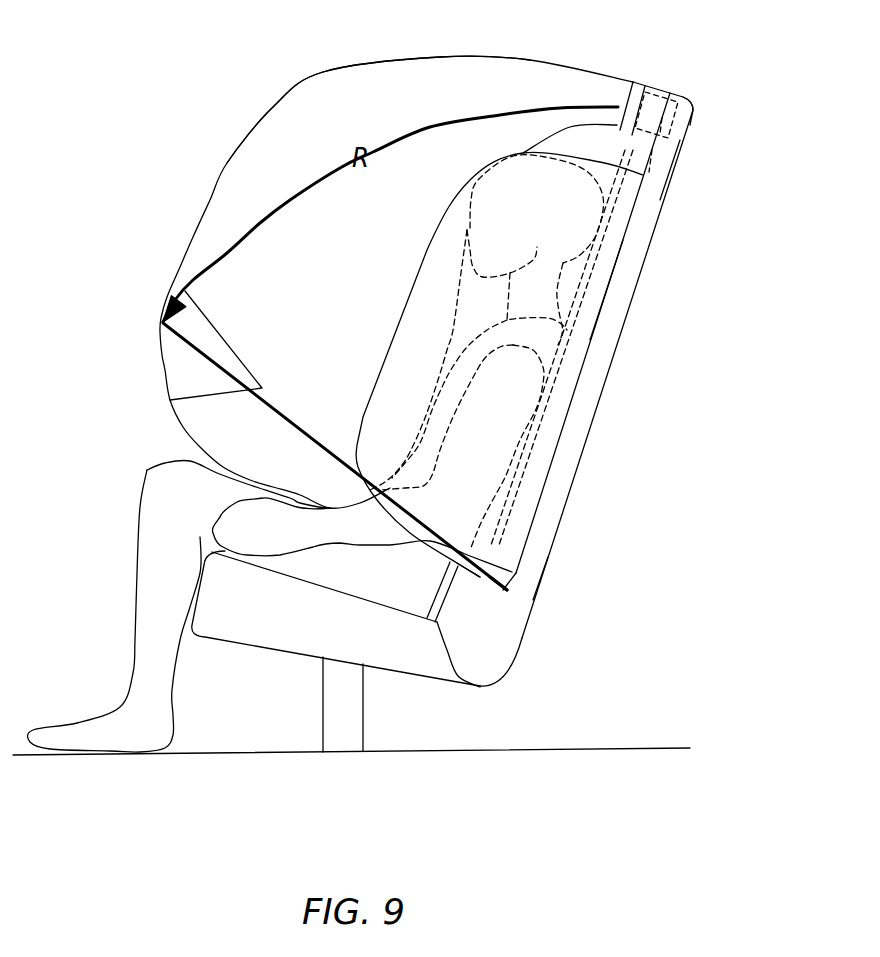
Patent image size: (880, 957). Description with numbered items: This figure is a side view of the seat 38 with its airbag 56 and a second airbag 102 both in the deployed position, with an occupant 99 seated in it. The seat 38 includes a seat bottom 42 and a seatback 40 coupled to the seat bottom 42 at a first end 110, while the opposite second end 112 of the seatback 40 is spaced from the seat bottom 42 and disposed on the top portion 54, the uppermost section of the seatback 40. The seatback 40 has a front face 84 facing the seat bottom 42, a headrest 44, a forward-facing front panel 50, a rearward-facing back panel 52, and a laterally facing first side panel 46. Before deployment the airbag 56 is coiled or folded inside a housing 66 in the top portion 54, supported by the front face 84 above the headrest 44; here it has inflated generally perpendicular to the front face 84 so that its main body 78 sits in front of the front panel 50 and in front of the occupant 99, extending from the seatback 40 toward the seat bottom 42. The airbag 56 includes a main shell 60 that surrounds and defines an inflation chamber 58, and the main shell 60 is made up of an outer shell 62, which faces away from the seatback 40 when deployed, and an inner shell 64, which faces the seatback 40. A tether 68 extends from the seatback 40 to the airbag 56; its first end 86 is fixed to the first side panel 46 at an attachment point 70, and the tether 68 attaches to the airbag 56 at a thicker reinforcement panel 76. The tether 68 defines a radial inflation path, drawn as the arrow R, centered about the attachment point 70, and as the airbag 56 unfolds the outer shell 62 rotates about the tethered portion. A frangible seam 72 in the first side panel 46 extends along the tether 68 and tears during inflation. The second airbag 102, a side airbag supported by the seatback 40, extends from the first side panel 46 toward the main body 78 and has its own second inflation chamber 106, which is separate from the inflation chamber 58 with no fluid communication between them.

The seat 38 is at (518, 648).
The seatback 40 is at (550, 540).
The seat bottom 42 is at (270, 653).
The headrest 44 is at (590, 267).
The first side panel 46 is at (528, 564).
The front panel 50 is at (457, 567).
The back panel 52 is at (539, 578).
The top portion 54 is at (690, 123).
The airbag 56 is at (424, 57).
The inflation chamber 58 is at (517, 72).
The main shell 60 is at (226, 163).
The outer shell 62 is at (323, 72).
The inner shell 64 is at (453, 303).
The housing 66 is at (680, 132).
The tether 68 is at (287, 420).
The attachment point 70 is at (508, 590).
The frangible seam 72 is at (670, 178).
The reinforcement panel 76 is at (215, 325).
The main body 78 is at (260, 490).
The front face 84 is at (447, 597).
The first end 86 is at (517, 597).
The occupant 99 is at (140, 547).
The second airbag 102 is at (607, 298).
The second inflation chamber 106 is at (573, 347).
The first end 110 is at (452, 673).
The second end 112 is at (667, 92).